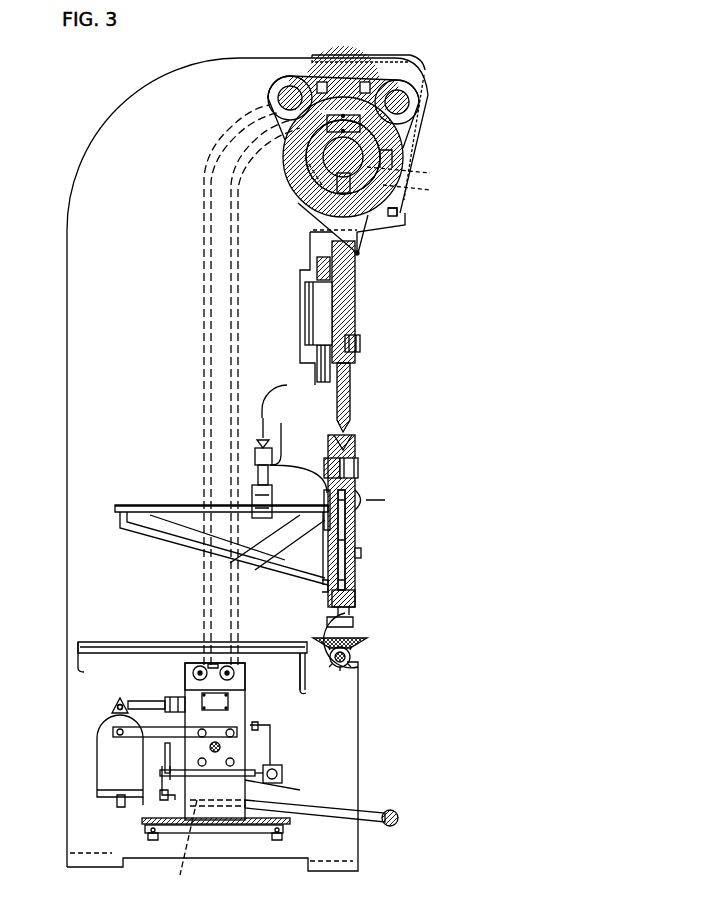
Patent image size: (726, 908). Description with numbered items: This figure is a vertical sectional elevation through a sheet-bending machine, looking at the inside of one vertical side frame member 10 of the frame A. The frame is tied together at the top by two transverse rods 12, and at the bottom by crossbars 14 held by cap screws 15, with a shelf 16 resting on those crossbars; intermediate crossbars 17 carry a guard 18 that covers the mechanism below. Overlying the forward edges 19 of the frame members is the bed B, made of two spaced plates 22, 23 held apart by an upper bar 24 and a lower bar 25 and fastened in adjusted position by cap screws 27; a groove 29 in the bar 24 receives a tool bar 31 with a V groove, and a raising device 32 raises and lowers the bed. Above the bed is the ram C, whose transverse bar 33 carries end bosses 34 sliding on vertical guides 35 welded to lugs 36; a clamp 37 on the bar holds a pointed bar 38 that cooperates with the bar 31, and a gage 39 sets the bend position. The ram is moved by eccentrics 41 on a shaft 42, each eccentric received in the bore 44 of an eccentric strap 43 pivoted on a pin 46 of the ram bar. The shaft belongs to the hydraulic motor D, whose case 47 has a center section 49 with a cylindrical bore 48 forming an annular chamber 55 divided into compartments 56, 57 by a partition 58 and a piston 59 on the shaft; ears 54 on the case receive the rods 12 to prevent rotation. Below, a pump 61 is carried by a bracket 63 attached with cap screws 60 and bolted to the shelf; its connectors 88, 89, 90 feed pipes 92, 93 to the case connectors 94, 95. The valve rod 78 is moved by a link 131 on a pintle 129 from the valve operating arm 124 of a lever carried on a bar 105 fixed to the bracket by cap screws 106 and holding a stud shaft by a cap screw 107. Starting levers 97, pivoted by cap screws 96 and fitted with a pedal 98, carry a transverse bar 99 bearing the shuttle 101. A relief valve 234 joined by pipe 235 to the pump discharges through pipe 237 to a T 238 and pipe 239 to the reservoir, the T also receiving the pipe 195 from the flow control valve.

The vertical side frame member 10 is at (86, 298).
The frame A is at (84, 480).
The transverse rod 12 is at (290, 88).
The crossbar 14 is at (232, 826).
The cap screw 15 is at (153, 840).
The shelf 16 is at (213, 833).
The crossbar 17 is at (118, 645).
The guard 18 is at (262, 650).
The forward edge 19 is at (327, 548).
The plate 22 is at (352, 572).
The plate 23 is at (336, 566).
The bar 24 is at (358, 472).
The bar 25 is at (352, 603).
The cap screw 27 is at (360, 554).
The groove 29 is at (356, 468).
The bar with V groove 31 is at (350, 448).
The raising device 32 is at (356, 633).
The transverse bar 33 is at (348, 312).
The boss 34 is at (318, 315).
The vertical guide 35 is at (320, 262).
The lug 36 is at (306, 270).
The clamp 37 is at (357, 348).
The bar 38 is at (346, 390).
The gage 39 is at (263, 433).
The eccentric 41 is at (417, 192).
The shaft 42 is at (335, 160).
The eccentric strap 43 is at (320, 306).
The bore 44 is at (412, 174).
The pin 46 is at (360, 253).
The case 47 is at (292, 152).
The cylindrical bore 48 is at (392, 156).
The center section 49 is at (398, 212).
The ear 54 is at (276, 90).
The annular chamber 55 is at (307, 158).
The compartment 56 is at (316, 137).
The compartment 57 is at (383, 148).
The partition 58 is at (343, 117).
The piston 59 is at (342, 190).
The cap screw 60 is at (220, 745).
The pump 61 is at (238, 708).
The bracket 63 is at (236, 761).
The valve rod 78 is at (168, 697).
The connector 88 is at (199, 665).
The connector 89 is at (231, 665).
The connector 90 is at (214, 662).
The pipe 92 is at (205, 345).
The pipe 93 is at (232, 335).
The connector 94 is at (323, 82).
The connector 95 is at (366, 82).
The cap screw 96 is at (182, 846).
The starting lever 97 is at (332, 806).
The pedal 98 is at (395, 812).
The transverse bar 99 is at (118, 801).
The shuttle 101 is at (100, 757).
The bar 105 is at (217, 792).
The cap screw 106 is at (206, 733).
The cap screw 107 is at (118, 730).
The valve operating arm 124 is at (120, 700).
The pintle 129 is at (118, 703).
The link 131 is at (145, 701).
The pipe 195 is at (165, 755).
The relief valve 234 is at (283, 775).
The pipe 235 is at (273, 745).
The pipe 237 is at (233, 810).
The T 238 is at (160, 778).
The pipe 239 is at (168, 796).
The bed B is at (352, 546).
The ram C is at (355, 330).
The hydraulic motor D is at (380, 144).